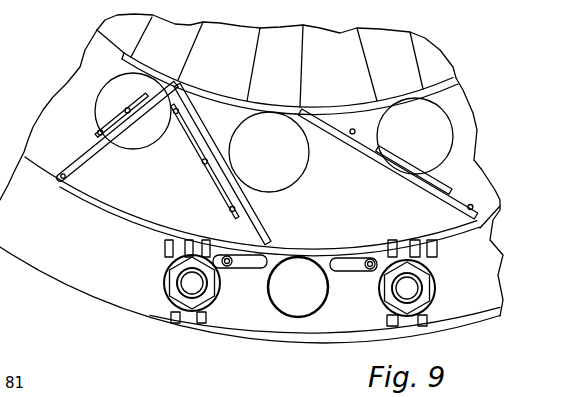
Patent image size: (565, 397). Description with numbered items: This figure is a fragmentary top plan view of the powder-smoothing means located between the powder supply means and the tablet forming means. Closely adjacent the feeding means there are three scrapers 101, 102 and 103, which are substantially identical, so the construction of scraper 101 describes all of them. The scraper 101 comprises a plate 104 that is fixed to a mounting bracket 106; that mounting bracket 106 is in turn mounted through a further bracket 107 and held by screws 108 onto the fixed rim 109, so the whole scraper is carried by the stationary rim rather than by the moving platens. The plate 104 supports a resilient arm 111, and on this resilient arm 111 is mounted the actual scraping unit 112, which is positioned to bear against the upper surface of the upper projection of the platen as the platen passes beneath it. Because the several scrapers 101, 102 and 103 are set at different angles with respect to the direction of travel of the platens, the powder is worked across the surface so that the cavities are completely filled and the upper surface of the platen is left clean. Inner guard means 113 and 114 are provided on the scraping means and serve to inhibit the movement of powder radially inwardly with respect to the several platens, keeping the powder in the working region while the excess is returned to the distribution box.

The scraper 101 is at (92, 157).
The scraper 102 is at (225, 198).
The scraper 103 is at (402, 178).
The plate 104 is at (127, 149).
The mounting bracket 106 is at (148, 222).
The bracket 107 is at (277, 318).
The screws 108 is at (177, 289).
The fixed rim 109 is at (0, 34).
The resilient arm 111 is at (77, 153).
The scraping unit 112 is at (97, 112).
The inner guard means 113 is at (122, 60).
The inner guard means 114 is at (233, 119).